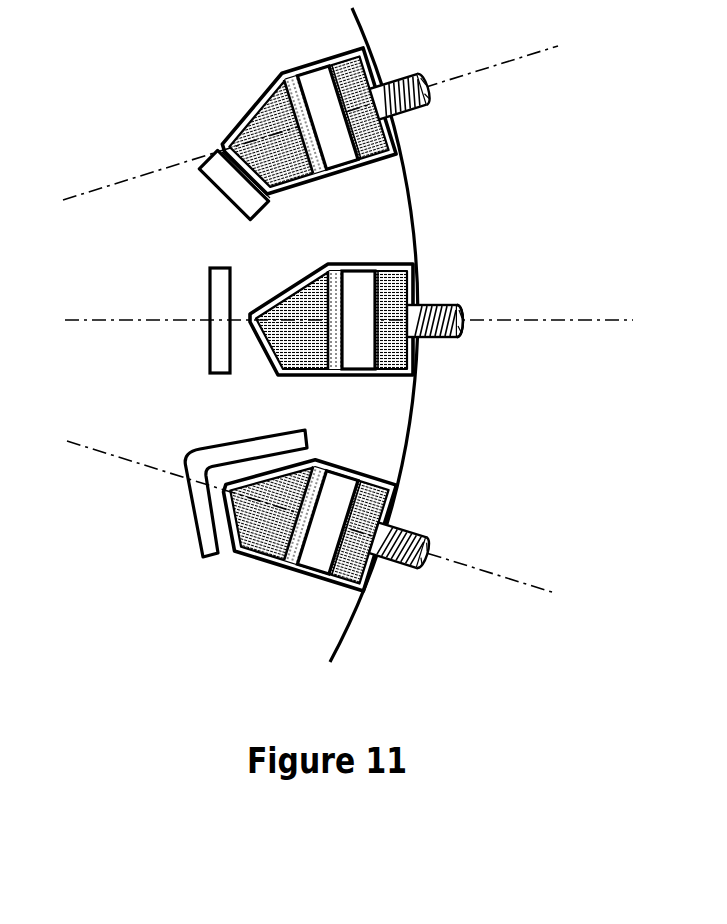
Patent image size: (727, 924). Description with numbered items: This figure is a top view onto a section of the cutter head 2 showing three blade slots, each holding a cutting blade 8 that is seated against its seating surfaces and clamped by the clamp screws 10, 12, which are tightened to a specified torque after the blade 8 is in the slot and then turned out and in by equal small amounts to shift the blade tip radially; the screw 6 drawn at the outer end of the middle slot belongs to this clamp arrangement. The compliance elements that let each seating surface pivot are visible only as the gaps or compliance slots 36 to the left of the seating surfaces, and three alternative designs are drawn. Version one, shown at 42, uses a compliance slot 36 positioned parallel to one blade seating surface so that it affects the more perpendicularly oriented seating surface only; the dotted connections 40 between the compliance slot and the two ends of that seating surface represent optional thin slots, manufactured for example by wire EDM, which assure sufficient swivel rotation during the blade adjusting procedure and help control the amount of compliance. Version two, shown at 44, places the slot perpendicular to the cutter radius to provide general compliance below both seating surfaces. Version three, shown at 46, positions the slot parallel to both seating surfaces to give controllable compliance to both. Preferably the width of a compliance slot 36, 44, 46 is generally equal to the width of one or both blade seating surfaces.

The cutter head 2 is at (365, 216).
The fastening screw 6 is at (411, 287).
The blade 8 is at (305, 338).
The upper clamp screw 10 is at (556, 350).
The lower clamp screw 12 is at (455, 338).
The compliance slot 36 is at (182, 353).
The thin connections 40 is at (268, 200).
The version 1 compliance slot arrangement 42 is at (240, 213).
The version 2 compliance slot arrangement 44 is at (205, 347).
The version 3 compliance slot arrangement 46 is at (187, 523).